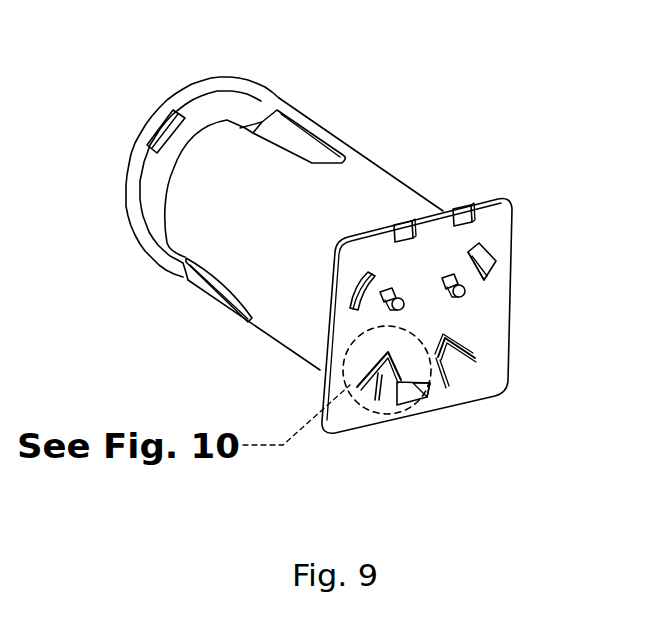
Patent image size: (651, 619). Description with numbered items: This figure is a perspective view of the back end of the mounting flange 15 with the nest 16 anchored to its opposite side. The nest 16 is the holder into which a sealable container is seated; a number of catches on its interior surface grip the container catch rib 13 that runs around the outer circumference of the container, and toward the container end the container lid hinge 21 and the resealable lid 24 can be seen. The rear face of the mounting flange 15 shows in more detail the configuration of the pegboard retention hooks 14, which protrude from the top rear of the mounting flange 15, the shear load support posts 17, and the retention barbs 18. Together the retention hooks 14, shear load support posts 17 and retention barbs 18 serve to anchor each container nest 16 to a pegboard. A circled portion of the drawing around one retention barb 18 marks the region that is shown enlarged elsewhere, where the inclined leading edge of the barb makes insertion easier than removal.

The container catch rib 13 is at (271, 112).
The pegboard retention hooks 14 is at (401, 222).
The mounting flange 15 is at (493, 342).
The nest 16 is at (352, 152).
The shear load support posts 17 is at (392, 303).
The retention barbs 18 is at (463, 362).
The container lid hinge 21 is at (160, 128).
The resealable lid 24 is at (140, 228).